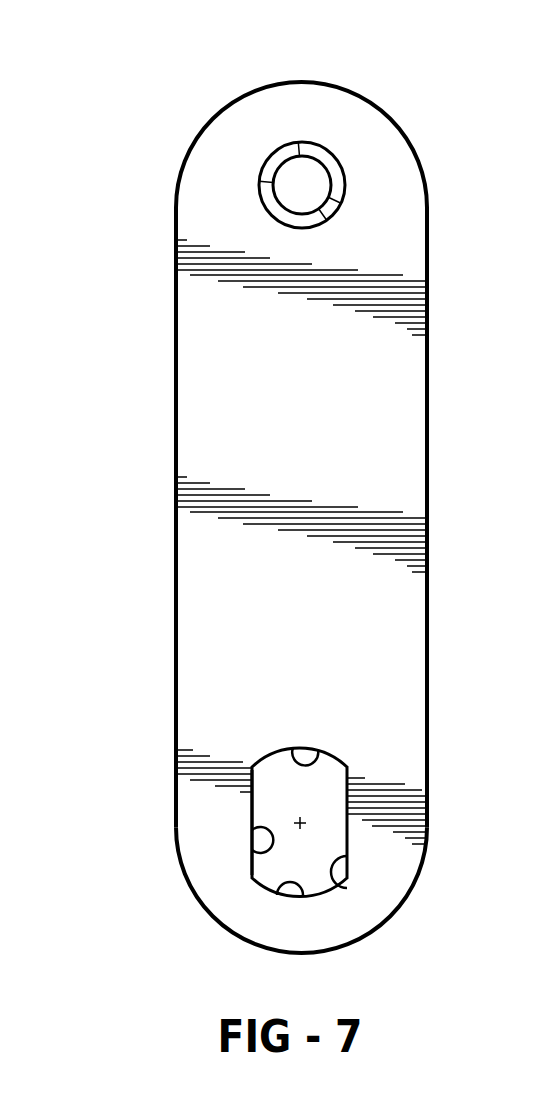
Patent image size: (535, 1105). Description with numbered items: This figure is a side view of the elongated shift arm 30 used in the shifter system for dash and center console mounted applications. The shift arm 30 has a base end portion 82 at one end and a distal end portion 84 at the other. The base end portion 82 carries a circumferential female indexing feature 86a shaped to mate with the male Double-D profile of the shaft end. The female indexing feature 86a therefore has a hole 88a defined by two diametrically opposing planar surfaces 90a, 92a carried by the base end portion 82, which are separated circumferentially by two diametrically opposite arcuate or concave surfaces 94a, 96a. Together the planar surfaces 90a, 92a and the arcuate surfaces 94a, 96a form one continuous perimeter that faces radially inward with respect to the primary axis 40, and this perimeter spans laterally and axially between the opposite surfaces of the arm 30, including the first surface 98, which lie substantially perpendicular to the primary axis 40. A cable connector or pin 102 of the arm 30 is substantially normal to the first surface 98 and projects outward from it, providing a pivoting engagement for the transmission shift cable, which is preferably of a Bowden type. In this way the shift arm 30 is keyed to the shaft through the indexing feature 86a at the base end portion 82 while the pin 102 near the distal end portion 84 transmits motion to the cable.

The elongated shift arm 30 is at (268, 492).
The distal end portion 84 is at (390, 148).
The base end portion 82 is at (387, 750).
The first surface 98 is at (212, 453).
The cable connector or pin 102 is at (303, 142).
The hole 88a is at (303, 790).
The female indexing feature 86a is at (258, 798).
The arcuate surface 94a is at (317, 752).
The planar surface 90a is at (262, 852).
The arcuate surface 96a is at (300, 897).
The planar surface 92a is at (333, 888).
The primary axis 40 is at (304, 822).